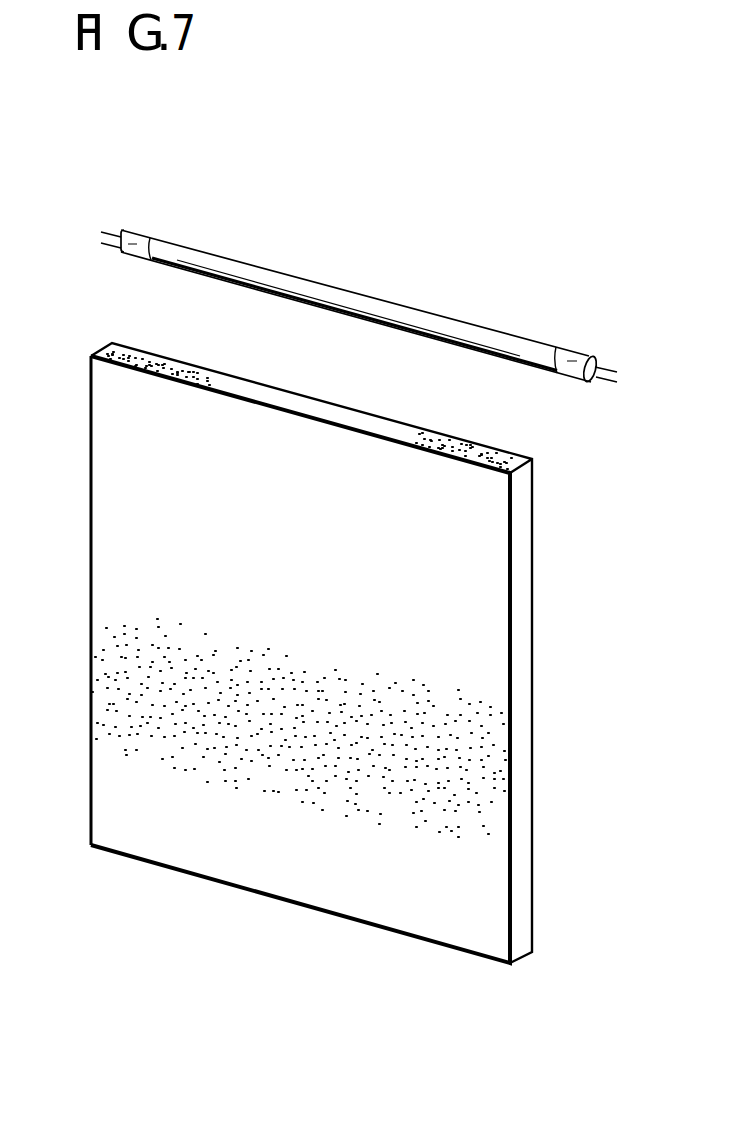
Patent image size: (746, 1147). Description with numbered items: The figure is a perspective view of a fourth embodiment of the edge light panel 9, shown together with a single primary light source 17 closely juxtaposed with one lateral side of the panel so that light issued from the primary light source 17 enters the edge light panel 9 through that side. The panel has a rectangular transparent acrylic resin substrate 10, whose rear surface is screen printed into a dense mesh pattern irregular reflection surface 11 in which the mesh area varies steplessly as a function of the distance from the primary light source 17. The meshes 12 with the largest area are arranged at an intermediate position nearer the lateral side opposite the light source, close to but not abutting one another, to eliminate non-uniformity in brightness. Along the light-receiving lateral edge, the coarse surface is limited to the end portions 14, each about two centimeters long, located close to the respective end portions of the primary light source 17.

The edge light panel 9 is at (346, 627).
The transparent acrylic resin substrate 10 is at (533, 546).
The irregular reflection surface 11 is at (487, 620).
The meshes 12 is at (483, 787).
The end portions of the lateral edge for receiving incident light 14 is at (134, 354).
The primary light source 17 is at (348, 291).